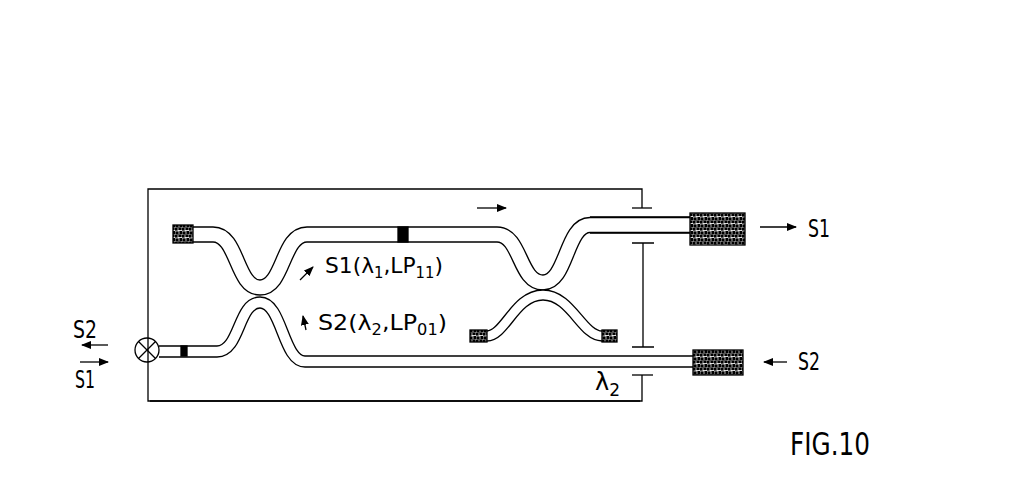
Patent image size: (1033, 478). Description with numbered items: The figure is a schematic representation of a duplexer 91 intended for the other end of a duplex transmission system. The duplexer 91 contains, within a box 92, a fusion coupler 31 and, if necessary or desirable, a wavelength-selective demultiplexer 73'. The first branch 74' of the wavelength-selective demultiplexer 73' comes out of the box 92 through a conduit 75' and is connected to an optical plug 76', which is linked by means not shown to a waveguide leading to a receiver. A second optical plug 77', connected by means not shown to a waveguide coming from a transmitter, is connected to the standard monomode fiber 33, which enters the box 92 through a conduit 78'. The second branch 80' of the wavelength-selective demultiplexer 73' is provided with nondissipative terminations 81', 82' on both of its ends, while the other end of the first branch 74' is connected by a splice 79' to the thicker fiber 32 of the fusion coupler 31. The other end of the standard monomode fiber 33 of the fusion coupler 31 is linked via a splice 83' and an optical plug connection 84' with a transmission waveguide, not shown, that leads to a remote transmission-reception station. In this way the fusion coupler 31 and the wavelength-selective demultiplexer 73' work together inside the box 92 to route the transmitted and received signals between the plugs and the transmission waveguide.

The fusion coupler 31 is at (259, 236).
The thicker fiber 32 is at (347, 228).
The standard monomode fiber 33 is at (478, 350).
The wavelength-selective demultiplexer 73' is at (545, 215).
The first branch 74' is at (640, 191).
The conduit 75' is at (667, 171).
The optical plug 76' is at (717, 201).
The second optical plug 77' is at (730, 385).
The conduit 78' is at (664, 404).
The splice 79' is at (420, 192).
The second branch 80' is at (552, 374).
The nondissipative termination 81' is at (485, 309).
The nondissipative termination 82' is at (649, 295).
The splice 83' is at (186, 399).
The optical plug connection 84' is at (134, 382).
The duplexer 91 is at (459, 182).
The box 92 is at (313, 392).